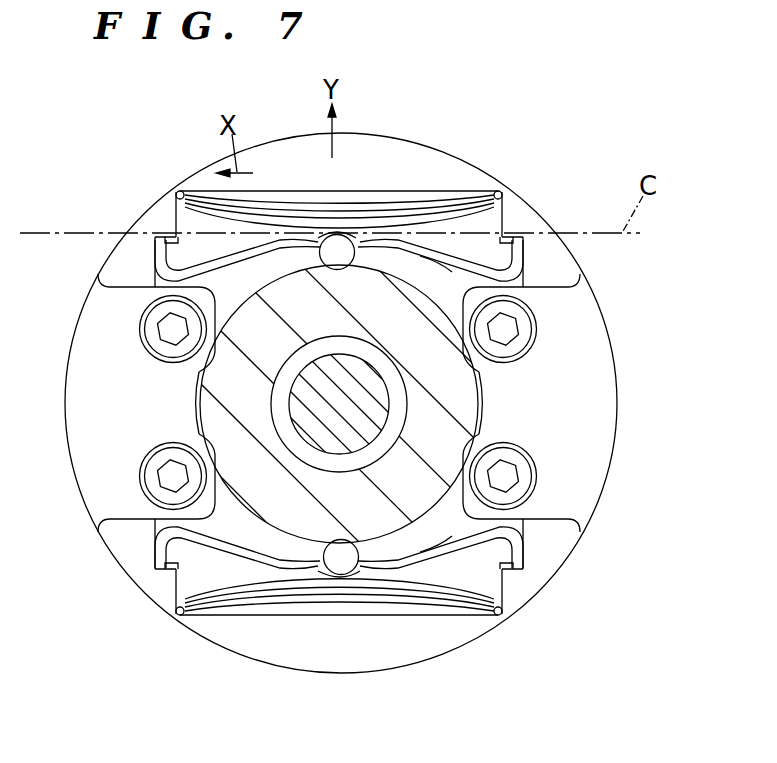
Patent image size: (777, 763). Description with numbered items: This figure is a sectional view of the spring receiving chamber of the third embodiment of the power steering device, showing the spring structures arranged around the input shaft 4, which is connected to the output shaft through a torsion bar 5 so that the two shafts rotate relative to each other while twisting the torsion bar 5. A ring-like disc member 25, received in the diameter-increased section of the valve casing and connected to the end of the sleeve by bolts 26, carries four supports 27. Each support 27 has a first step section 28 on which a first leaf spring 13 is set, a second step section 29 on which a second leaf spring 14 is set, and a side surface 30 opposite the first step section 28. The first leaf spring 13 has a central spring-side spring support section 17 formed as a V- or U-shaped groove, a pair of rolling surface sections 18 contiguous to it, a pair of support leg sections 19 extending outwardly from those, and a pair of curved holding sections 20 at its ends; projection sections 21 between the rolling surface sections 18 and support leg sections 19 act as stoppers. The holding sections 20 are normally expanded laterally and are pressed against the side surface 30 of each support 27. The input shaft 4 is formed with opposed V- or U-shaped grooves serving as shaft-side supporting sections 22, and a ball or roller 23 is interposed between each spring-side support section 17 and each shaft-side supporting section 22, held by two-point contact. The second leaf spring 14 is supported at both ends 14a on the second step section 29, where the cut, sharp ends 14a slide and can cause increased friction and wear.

The input shaft 4 is at (203, 407).
The torsion bar 5 is at (372, 404).
The first leaf spring 13 is at (337, 403).
The second leaf spring 14 is at (273, 232).
The end of the second leaf spring 14a is at (172, 230).
The spring-side spring support section 17 is at (341, 246).
The rolling surface sections 18 is at (369, 247).
The support leg sections 19 is at (436, 240).
The holding sections 20 is at (452, 253).
The projection sections 21 is at (395, 247).
The shaft-side supporting section 22 is at (337, 270).
The ball or roller 23 is at (317, 245).
The disc member 25 is at (590, 344).
The bolts 26 is at (160, 330).
The supports 27 is at (150, 218).
The first step section 28 is at (165, 236).
The second step section 29 is at (180, 191).
The side surface 30 is at (97, 270).